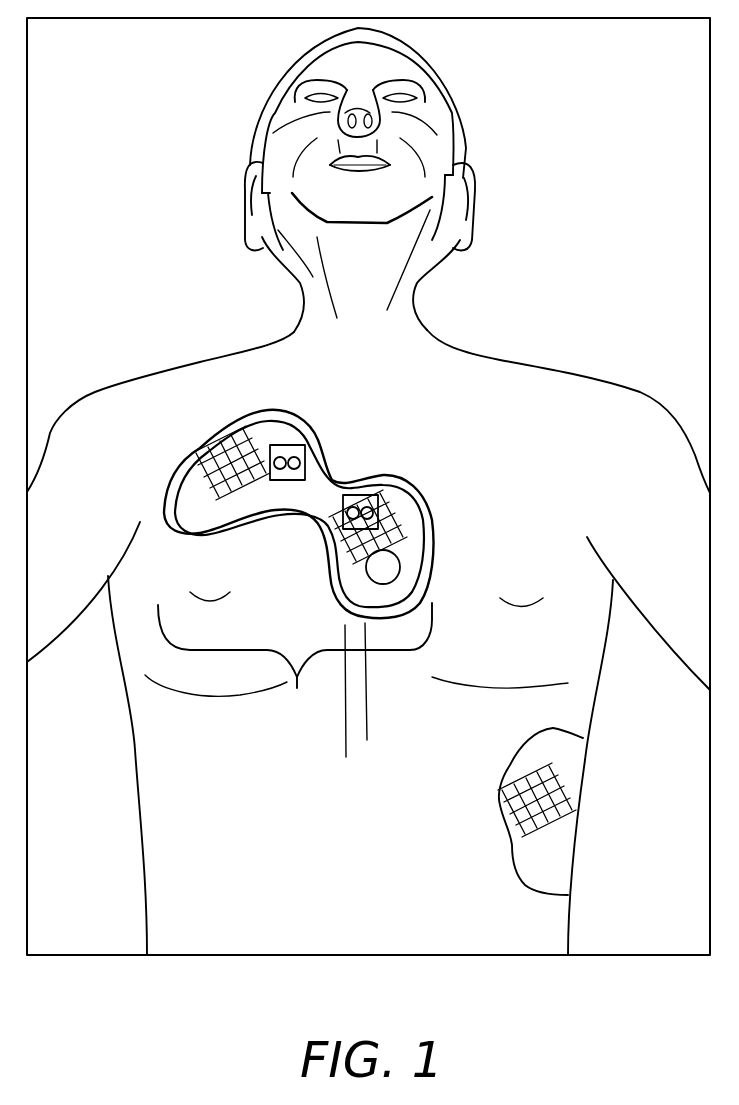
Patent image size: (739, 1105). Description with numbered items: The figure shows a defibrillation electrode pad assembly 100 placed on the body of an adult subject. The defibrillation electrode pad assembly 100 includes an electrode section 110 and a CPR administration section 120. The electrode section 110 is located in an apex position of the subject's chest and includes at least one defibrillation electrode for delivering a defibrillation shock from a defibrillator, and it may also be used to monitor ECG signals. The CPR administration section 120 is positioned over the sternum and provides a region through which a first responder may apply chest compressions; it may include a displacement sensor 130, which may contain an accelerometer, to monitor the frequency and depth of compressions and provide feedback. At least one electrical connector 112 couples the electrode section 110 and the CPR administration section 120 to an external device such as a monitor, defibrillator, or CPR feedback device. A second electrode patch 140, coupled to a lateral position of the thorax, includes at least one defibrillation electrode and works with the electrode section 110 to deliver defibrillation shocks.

The defibrillation electrode pad assembly 100 is at (368, 491).
The electrode section 110 is at (225, 420).
The electrical connector 112 is at (290, 445).
The CPR administration section 120 is at (402, 487).
The displacement sensor 130 is at (399, 562).
The second electrode patch 140 is at (553, 728).